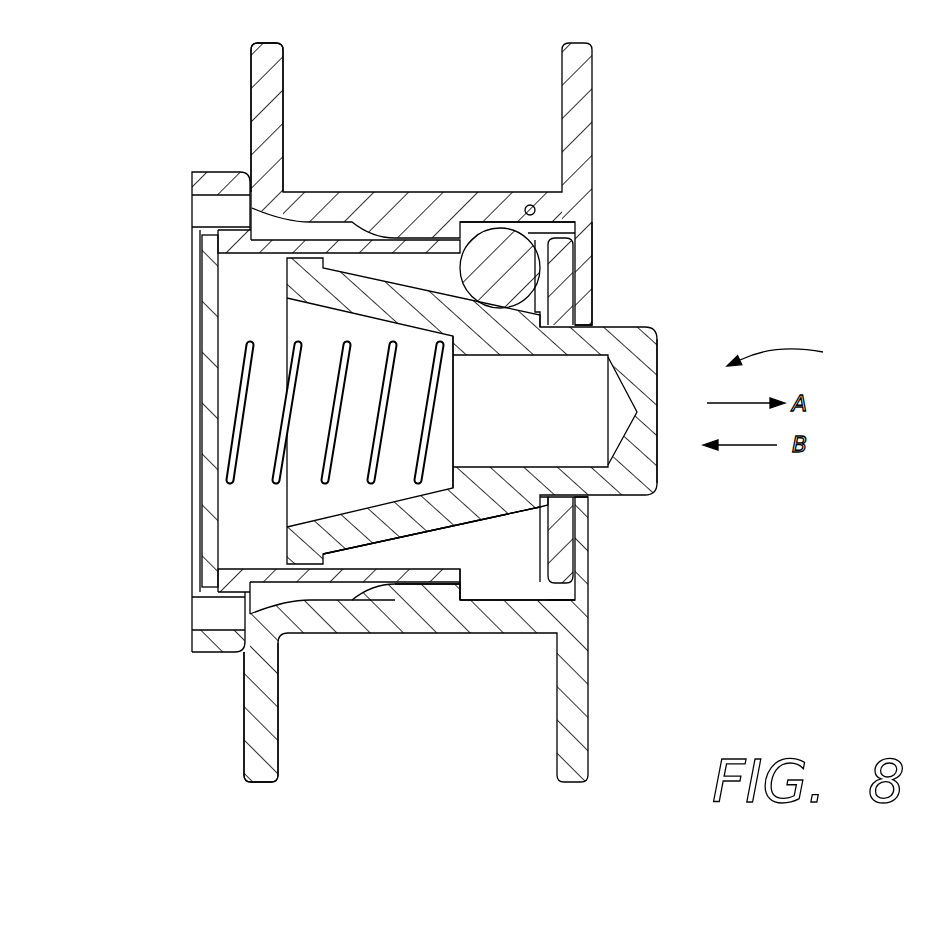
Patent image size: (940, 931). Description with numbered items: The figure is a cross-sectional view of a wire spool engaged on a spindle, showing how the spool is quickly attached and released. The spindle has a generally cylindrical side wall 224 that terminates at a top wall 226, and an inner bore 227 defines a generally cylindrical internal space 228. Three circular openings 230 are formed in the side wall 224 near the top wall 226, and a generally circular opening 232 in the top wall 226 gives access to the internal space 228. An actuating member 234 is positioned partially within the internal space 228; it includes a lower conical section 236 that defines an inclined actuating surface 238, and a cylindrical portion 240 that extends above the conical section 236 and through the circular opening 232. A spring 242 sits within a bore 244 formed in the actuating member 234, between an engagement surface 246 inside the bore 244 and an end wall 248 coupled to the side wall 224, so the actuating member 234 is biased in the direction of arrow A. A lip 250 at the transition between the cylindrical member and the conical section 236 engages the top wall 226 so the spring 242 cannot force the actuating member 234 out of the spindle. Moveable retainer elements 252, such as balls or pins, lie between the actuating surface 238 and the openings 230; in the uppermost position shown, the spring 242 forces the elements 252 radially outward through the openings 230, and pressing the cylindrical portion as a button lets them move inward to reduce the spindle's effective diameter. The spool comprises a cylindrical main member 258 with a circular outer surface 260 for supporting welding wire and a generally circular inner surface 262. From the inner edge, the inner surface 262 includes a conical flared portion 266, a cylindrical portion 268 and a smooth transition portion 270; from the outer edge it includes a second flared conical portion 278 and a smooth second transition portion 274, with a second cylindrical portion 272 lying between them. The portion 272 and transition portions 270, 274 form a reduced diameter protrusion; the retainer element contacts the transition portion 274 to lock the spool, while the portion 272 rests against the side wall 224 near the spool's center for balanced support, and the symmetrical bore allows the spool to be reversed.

The side wall 224 is at (507, 577).
The top wall 226 is at (585, 562).
The inner bore 227 is at (290, 538).
The internal space 228 is at (518, 556).
The circular openings 230 is at (565, 235).
The circular opening 232 is at (593, 323).
The actuating member 234 is at (798, 353).
The conical section 236 is at (400, 552).
The actuating surface 238 is at (398, 283).
The cylindrical portion 240 is at (628, 510).
The spring 242 is at (240, 497).
The bore 244 is at (492, 362).
The engagement surface 246 is at (455, 468).
The end wall 248 is at (222, 338).
The lip 250 is at (548, 513).
The retainer elements 252 is at (560, 276).
The main member 258 is at (455, 205).
The outer surface 260 is at (337, 190).
The inner surface 262 is at (560, 222).
The conical flared portion 266 is at (250, 657).
The cylindrical portion 268 is at (303, 633).
The transition portion 270 is at (377, 633).
The second cylindrical portion 272 is at (433, 587).
The second transition portion 274 is at (480, 590).
The second flared conical portion 278 is at (573, 600).